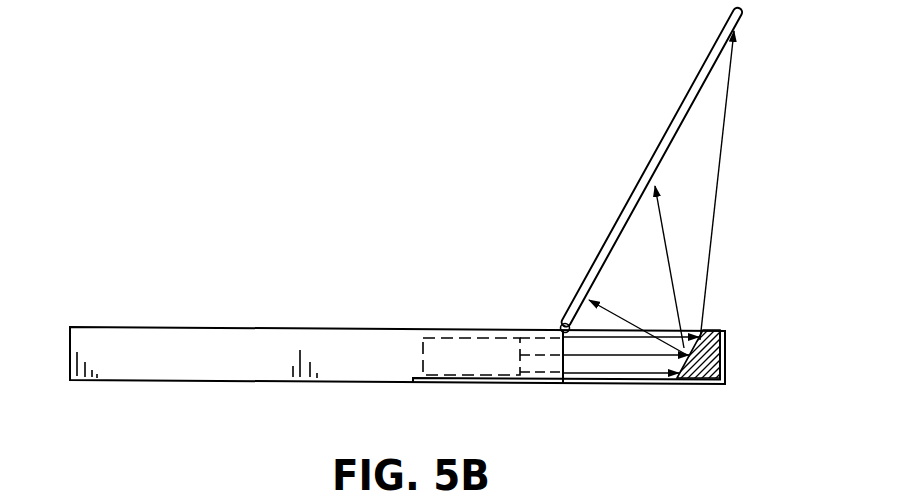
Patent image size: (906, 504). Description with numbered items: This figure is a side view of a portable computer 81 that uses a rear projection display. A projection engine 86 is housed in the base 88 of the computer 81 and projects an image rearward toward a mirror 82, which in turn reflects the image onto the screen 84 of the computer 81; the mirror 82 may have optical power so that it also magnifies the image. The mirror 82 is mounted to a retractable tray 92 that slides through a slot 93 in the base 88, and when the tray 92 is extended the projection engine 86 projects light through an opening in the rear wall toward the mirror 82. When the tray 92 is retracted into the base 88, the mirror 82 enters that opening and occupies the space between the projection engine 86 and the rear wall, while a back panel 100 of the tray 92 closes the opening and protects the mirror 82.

The portable computer 81 is at (296, 309).
The mirror 82 is at (707, 367).
The screen 84 is at (712, 52).
The projection engine 86 is at (424, 337).
The base 88 is at (130, 327).
The retractable tray 92 is at (737, 352).
The slot 93 is at (533, 381).
The back panel 100 is at (727, 330).